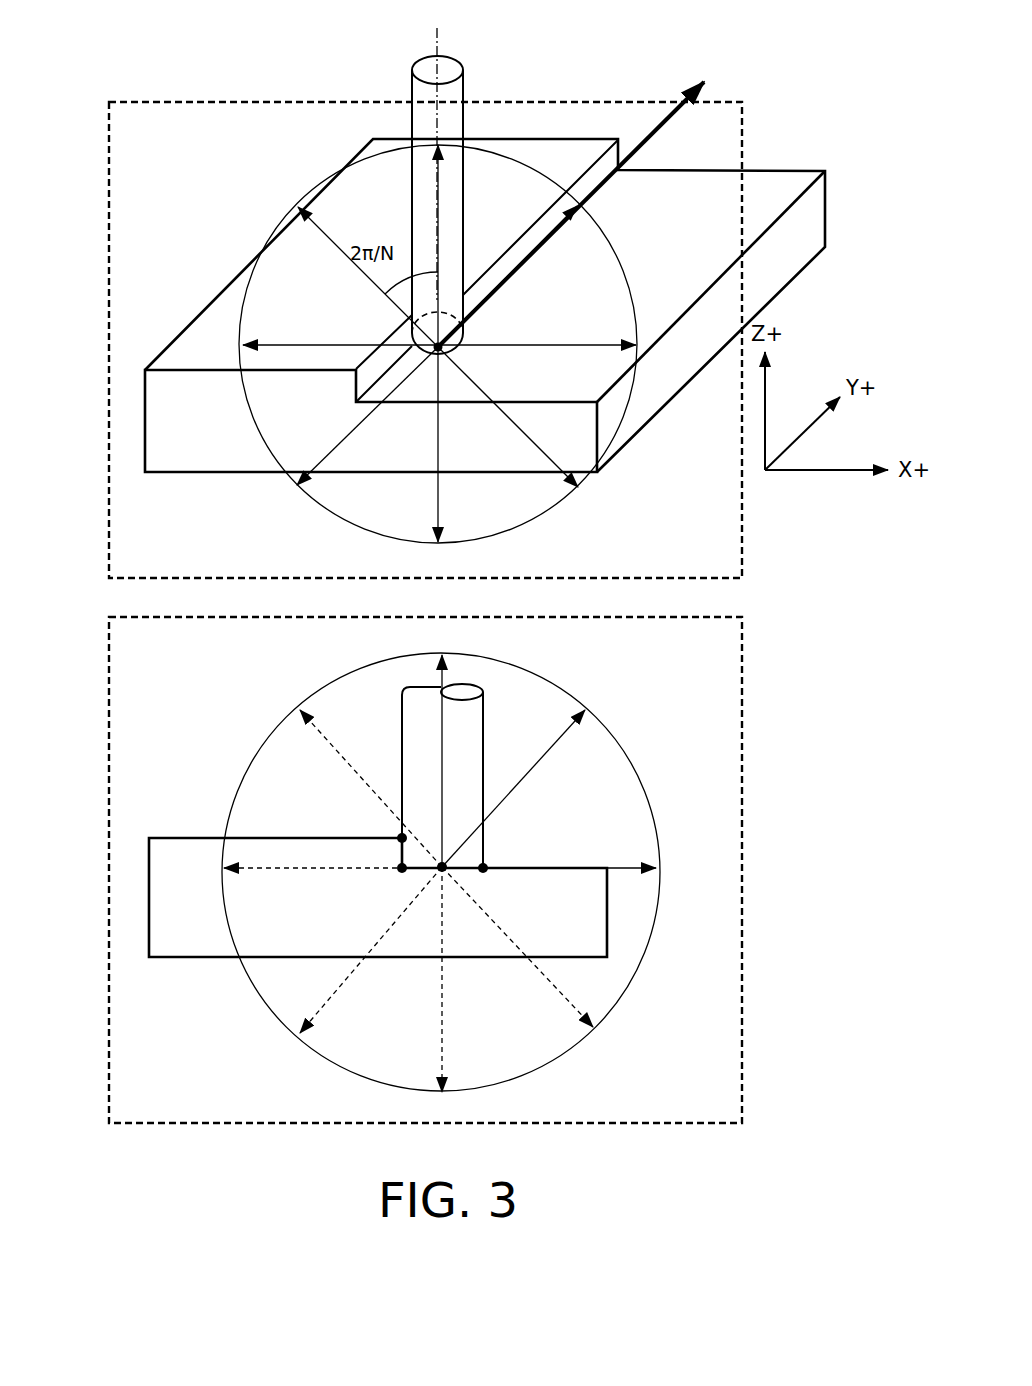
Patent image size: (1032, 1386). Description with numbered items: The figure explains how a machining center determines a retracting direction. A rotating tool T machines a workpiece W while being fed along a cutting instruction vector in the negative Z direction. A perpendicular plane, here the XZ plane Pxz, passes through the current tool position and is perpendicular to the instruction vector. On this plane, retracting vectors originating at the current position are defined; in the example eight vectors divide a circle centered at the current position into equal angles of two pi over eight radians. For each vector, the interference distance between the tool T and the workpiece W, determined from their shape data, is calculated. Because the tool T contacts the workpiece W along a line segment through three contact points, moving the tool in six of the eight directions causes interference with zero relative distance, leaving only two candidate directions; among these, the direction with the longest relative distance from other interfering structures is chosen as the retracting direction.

The tool T is at (412, 93).
The workpiece W is at (145, 398).
The XZ plane Pxz is at (109, 197).